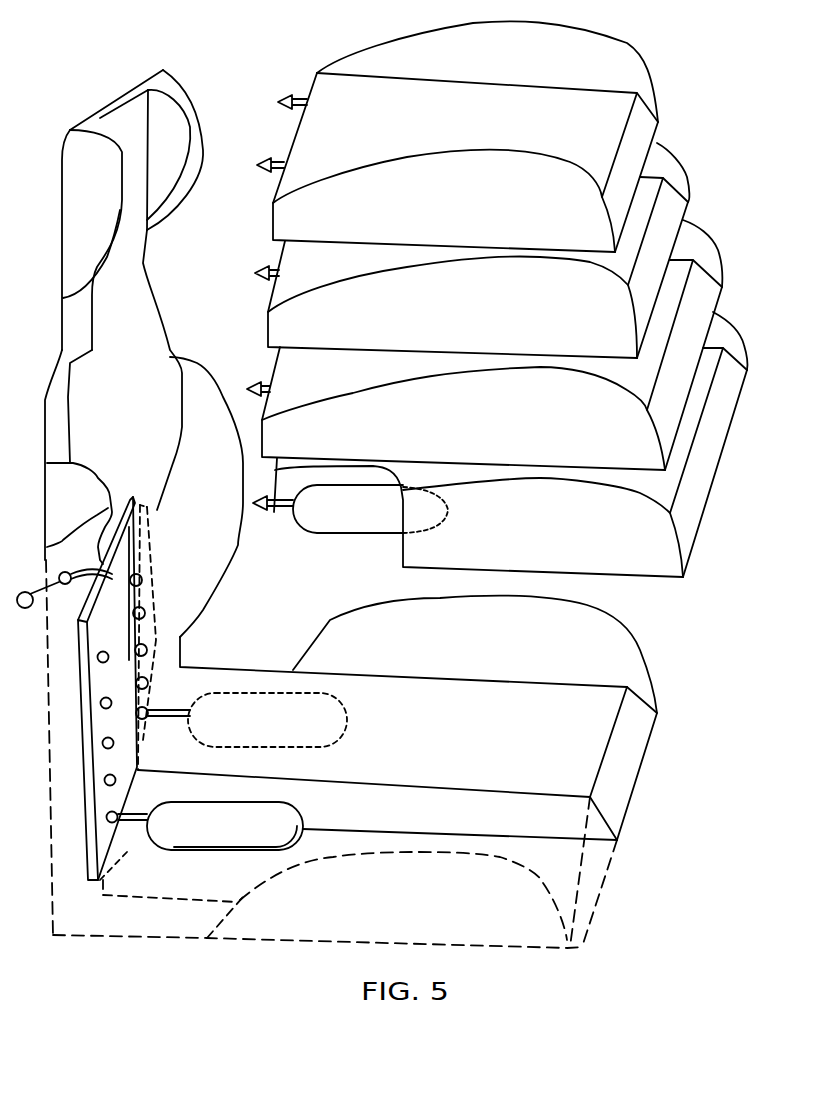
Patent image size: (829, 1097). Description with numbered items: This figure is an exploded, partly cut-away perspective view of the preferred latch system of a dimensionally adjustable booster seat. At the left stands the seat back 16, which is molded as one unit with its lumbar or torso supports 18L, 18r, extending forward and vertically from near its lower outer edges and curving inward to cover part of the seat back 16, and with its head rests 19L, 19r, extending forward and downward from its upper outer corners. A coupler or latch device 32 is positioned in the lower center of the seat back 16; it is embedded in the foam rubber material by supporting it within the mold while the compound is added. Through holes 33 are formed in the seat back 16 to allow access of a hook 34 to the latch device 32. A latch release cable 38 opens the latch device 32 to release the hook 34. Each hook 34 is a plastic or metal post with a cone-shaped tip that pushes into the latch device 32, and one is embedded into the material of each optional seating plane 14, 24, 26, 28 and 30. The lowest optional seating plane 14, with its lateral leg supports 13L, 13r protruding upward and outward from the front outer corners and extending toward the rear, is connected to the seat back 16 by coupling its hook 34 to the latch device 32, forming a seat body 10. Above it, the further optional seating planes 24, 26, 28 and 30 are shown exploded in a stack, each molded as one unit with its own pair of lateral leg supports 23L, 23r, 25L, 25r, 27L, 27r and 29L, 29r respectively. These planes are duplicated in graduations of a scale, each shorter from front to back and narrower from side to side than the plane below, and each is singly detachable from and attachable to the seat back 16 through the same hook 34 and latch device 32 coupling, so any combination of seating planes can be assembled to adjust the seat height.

The seat body 10 is at (212, 670).
The lateral leg support 13L is at (475, 654).
The lateral leg support 13r is at (382, 923).
The optional seating plane 14 is at (633, 787).
The seat back 16 is at (97, 418).
The torso support 18L is at (189, 476).
The torso support 18r is at (64, 510).
The head rest 19L is at (199, 100).
The head rest 19r is at (78, 207).
The lateral leg support 23L is at (747, 348).
The lateral leg support 23r is at (528, 555).
The optional seating plane 24 is at (737, 405).
The lateral leg support 25L is at (725, 264).
The lateral leg support 25r is at (501, 443).
The optional seating plane 26 is at (717, 308).
The lateral leg support 27L is at (689, 176).
The lateral leg support 27r is at (468, 327).
The optional seating plane 28 is at (687, 217).
The lateral leg support 29L is at (658, 90).
The lateral leg support 29r is at (450, 213).
The optional seating plane 30 is at (657, 131).
The latch device 32 is at (82, 753).
The through holes 33 is at (145, 584).
The hook 34 is at (283, 106).
The latch release cable 38 is at (48, 586).